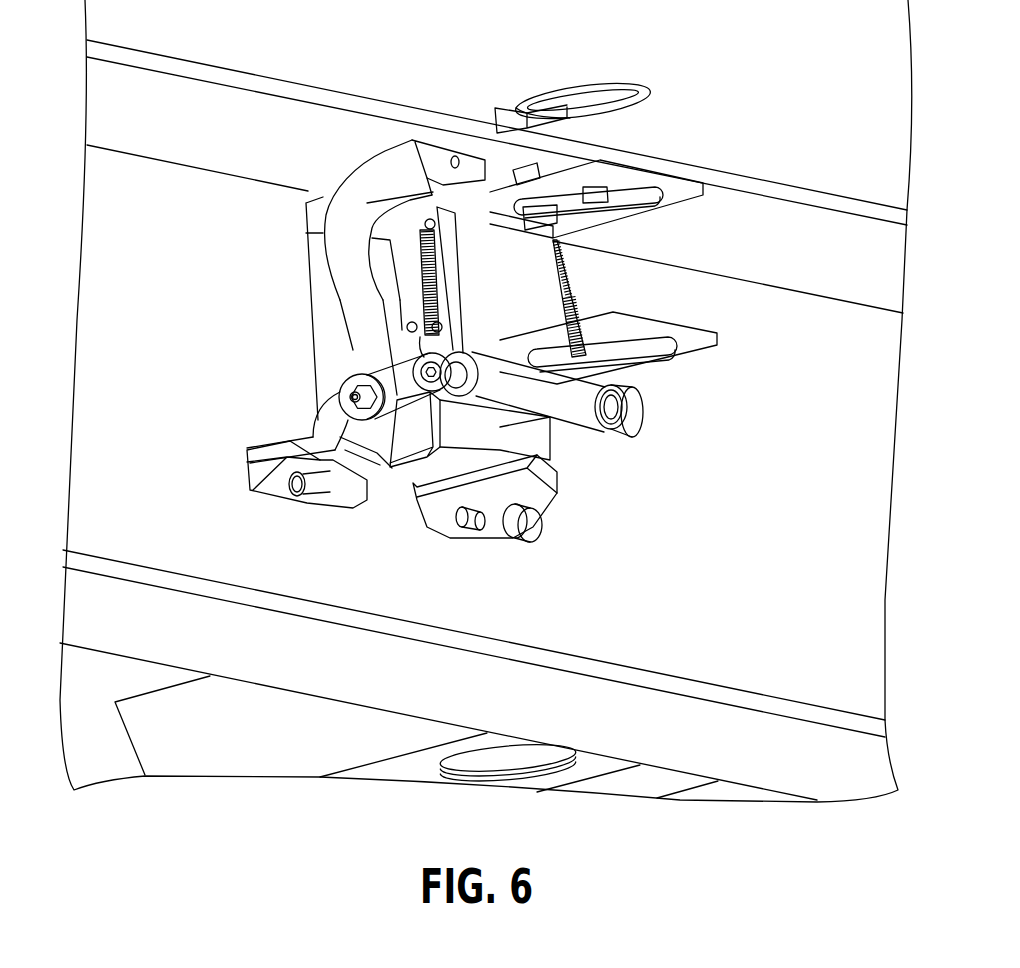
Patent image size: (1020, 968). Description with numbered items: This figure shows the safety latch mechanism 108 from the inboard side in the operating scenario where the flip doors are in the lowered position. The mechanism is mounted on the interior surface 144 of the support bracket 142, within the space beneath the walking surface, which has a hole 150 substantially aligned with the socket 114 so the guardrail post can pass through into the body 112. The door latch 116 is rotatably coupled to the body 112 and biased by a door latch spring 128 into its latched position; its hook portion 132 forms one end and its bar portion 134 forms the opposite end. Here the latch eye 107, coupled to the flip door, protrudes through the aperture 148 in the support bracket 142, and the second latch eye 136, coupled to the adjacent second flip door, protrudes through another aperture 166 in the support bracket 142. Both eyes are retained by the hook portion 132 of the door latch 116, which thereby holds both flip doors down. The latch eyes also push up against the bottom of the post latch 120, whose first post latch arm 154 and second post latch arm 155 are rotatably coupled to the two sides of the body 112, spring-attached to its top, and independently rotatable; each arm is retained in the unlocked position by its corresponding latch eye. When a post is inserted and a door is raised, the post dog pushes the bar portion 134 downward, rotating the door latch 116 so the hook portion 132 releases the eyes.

The latch eye 107 is at (257, 490).
The safety latch mechanism 108 is at (578, 511).
The body 112 is at (318, 297).
The socket 114 is at (683, 180).
The door latch 116 is at (333, 408).
The post latch 120 is at (363, 343).
The door latch spring 128 is at (433, 280).
The hook portion 132 is at (335, 480).
The bar portion 134 is at (575, 408).
The second latch eye 136 is at (467, 487).
The support bracket 142 is at (263, 82).
The interior surface 144 is at (104, 268).
The aperture 148 is at (250, 447).
The hole 150 is at (620, 88).
The first post latch arm 154 is at (387, 167).
The second post latch arm 155 is at (525, 172).
The another aperture 166 is at (490, 540).